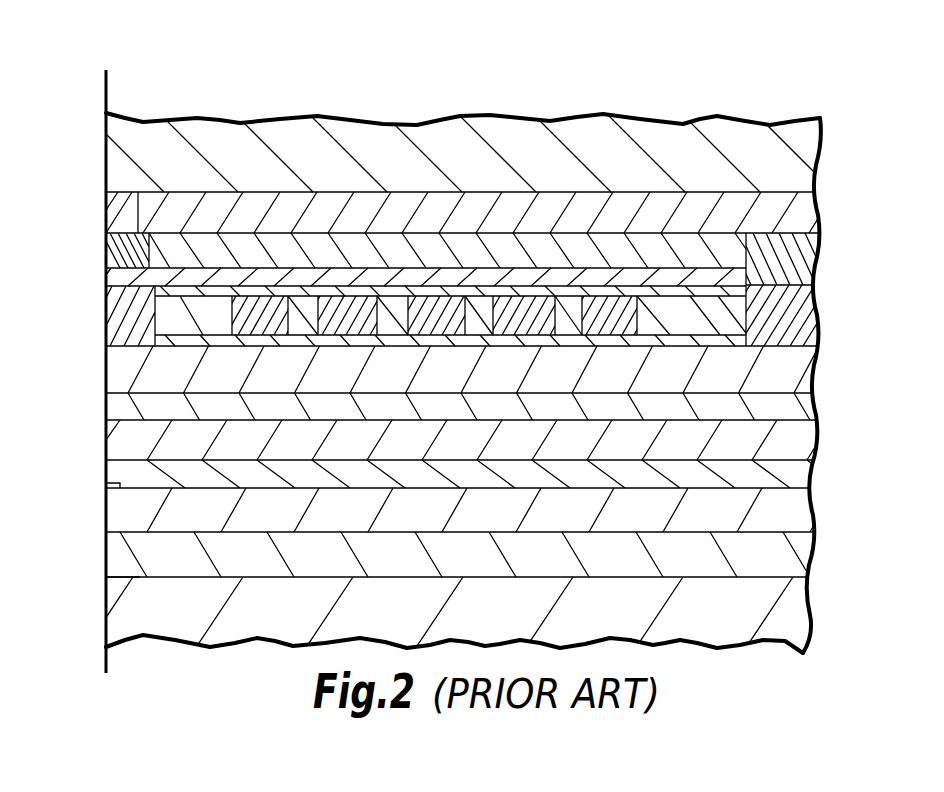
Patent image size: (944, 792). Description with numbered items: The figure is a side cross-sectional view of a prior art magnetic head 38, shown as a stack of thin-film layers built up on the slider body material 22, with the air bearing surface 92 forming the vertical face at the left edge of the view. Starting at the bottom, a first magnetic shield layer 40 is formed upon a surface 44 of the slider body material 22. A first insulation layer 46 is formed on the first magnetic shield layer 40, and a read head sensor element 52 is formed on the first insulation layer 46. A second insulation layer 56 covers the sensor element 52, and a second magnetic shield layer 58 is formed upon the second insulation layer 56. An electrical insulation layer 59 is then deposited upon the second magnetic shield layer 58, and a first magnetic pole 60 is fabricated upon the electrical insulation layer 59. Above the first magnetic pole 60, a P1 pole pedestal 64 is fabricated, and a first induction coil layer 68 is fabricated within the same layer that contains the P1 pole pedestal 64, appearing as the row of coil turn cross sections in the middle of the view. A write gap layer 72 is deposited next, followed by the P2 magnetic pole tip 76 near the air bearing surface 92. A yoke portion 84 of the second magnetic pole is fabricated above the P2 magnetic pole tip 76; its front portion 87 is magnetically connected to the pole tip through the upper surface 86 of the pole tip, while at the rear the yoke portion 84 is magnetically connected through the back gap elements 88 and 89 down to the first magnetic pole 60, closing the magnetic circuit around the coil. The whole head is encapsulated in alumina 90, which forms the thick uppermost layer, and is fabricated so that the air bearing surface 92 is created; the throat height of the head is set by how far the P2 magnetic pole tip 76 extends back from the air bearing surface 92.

The slider body material 22 is at (190, 625).
The magnetic head 38 is at (176, 114).
The first magnetic shield layer (S1) 40 is at (118, 540).
The surface 44 is at (120, 578).
The first insulation layer (G1) 46 is at (120, 505).
The read head sensor element 52 is at (107, 488).
The second insulation layer (G2) 56 is at (115, 468).
The second magnetic shield layer (S2) 58 is at (115, 427).
The electrical insulation layer 59 is at (115, 405).
The first magnetic pole (P1) 60 is at (120, 358).
The P1 pole pedestal 64 is at (118, 312).
The first induction coil layer 68 is at (342, 335).
The write gap layer 72 is at (118, 278).
The P2 magnetic pole tip 76 is at (118, 253).
The yoke portion of the second magnetic pole 84 is at (535, 212).
The upper surface of the P2 pole tip 86 is at (118, 228).
The front portion of the yoke 87 is at (136, 207).
The back gap element 88 is at (797, 260).
The back gap element 89 is at (798, 313).
The alumina encapsulation 90 is at (410, 130).
The air bearing surface (ABS) 92 is at (105, 84).